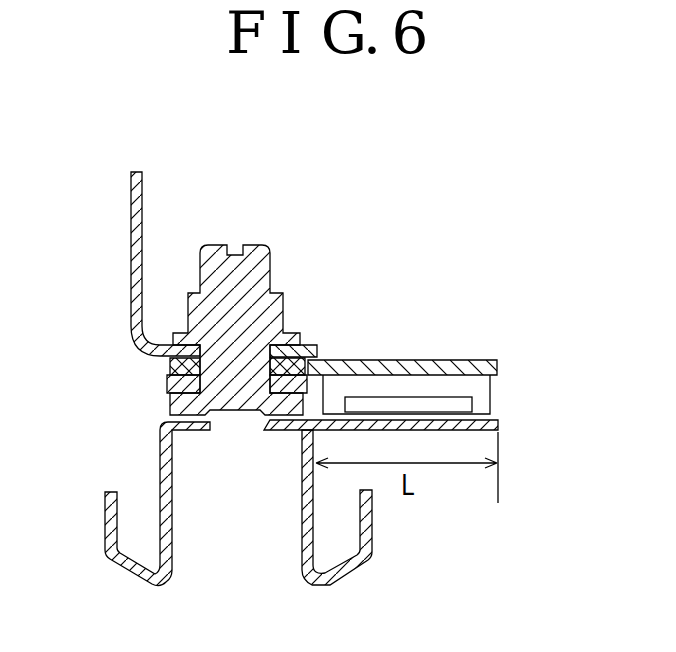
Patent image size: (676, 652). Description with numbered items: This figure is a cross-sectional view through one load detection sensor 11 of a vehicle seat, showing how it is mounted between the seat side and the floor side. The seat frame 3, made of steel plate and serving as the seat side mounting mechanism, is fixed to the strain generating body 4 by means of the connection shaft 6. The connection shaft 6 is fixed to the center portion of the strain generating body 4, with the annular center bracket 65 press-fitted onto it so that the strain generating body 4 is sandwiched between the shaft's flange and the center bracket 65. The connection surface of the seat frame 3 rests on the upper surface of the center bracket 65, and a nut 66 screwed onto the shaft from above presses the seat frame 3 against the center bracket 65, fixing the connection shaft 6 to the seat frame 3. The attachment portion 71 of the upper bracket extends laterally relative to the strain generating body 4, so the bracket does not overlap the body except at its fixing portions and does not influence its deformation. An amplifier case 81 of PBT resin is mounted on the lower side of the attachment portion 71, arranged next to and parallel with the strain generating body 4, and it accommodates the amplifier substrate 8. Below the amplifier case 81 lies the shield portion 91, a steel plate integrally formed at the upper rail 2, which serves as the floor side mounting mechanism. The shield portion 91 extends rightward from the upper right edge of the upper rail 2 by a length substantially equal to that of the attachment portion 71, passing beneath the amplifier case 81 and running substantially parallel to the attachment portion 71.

The load detection sensor 11 is at (118, 116).
The seat frame 3 is at (130, 230).
The connection shaft 6 is at (255, 258).
The nut 66 is at (285, 330).
The attachment portion 71 is at (427, 367).
The center bracket 65 is at (168, 368).
The strain generating body 4 is at (167, 383).
The amplifier case 81 is at (483, 393).
The amplifier substrate 8 is at (493, 408).
The shield portion 91 is at (500, 425).
The upper rail 2 is at (367, 537).